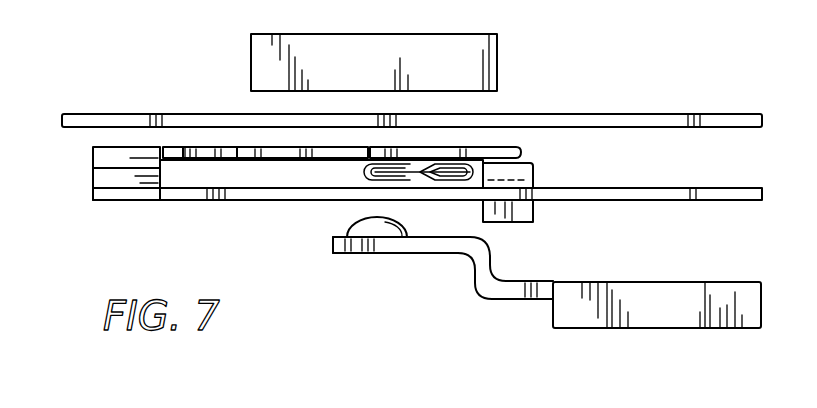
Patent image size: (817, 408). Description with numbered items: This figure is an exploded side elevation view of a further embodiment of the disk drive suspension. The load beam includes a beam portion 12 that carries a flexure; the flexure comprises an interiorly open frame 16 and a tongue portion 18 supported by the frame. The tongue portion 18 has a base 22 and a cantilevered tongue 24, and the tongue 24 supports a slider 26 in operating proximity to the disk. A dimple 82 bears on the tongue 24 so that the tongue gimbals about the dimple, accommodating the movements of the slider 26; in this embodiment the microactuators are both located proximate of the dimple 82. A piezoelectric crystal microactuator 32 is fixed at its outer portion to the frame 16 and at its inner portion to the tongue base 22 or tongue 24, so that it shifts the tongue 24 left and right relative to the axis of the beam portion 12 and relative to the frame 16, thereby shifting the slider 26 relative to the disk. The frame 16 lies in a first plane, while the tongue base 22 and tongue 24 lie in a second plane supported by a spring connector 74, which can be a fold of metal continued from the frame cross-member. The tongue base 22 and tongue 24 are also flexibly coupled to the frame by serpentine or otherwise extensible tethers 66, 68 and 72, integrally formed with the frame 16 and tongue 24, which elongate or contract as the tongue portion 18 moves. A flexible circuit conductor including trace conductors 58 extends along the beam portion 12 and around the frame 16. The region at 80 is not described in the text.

The beam portion 12 is at (665, 329).
The flexure frame 16 is at (660, 202).
The tongue portion 18 is at (283, 166).
The tongue portion base 22 is at (253, 166).
The tongue 24 is at (523, 150).
The slider 26 is at (348, 33).
The piezoelectric crystal microactuators 32 is at (510, 223).
The trace conductors 58 is at (642, 114).
The tether 66 is at (455, 201).
The tether 68 is at (392, 163).
The tether 72 is at (212, 150).
The spring connector 74 is at (105, 162).
The bent portion 80 is at (553, 312).
The dimple 82 is at (347, 222).